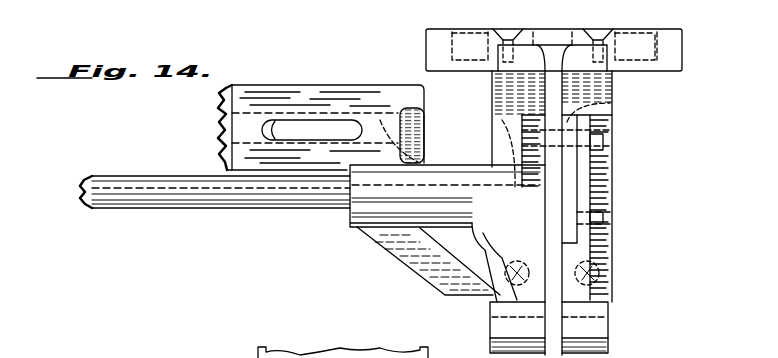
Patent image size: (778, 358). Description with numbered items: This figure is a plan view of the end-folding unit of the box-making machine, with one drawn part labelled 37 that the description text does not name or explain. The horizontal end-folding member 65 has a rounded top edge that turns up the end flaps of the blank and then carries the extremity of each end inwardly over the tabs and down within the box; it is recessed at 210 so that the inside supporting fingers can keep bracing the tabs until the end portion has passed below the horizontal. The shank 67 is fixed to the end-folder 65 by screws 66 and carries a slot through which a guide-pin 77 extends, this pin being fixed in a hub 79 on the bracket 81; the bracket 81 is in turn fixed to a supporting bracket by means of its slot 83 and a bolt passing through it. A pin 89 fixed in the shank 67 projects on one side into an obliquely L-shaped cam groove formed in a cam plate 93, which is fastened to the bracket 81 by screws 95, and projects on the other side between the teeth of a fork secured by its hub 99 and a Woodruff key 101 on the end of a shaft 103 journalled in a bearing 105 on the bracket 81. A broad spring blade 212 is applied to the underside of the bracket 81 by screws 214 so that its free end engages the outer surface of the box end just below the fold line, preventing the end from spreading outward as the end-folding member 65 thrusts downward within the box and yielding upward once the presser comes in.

The end-folding member 65 is at (672, 30).
The recess 210 is at (455, 31).
The screws 66 is at (505, 30).
The shank 67 is at (555, 97).
The spring blade 212 is at (492, 93).
The shoulder 37 is at (530, 107).
The Woodruff key 101 is at (510, 165).
The pin 89 is at (606, 113).
The cam plate 93 is at (570, 185).
The screws 95 is at (604, 138).
The screws 214 is at (592, 268).
The guide-pin 77 is at (603, 318).
The hub 79 is at (612, 356).
The slot 83 is at (219, 131).
The hub 99 is at (483, 165).
The shaft 103 is at (280, 208).
The bearing 105 is at (350, 224).
The bracket 81 is at (418, 262).